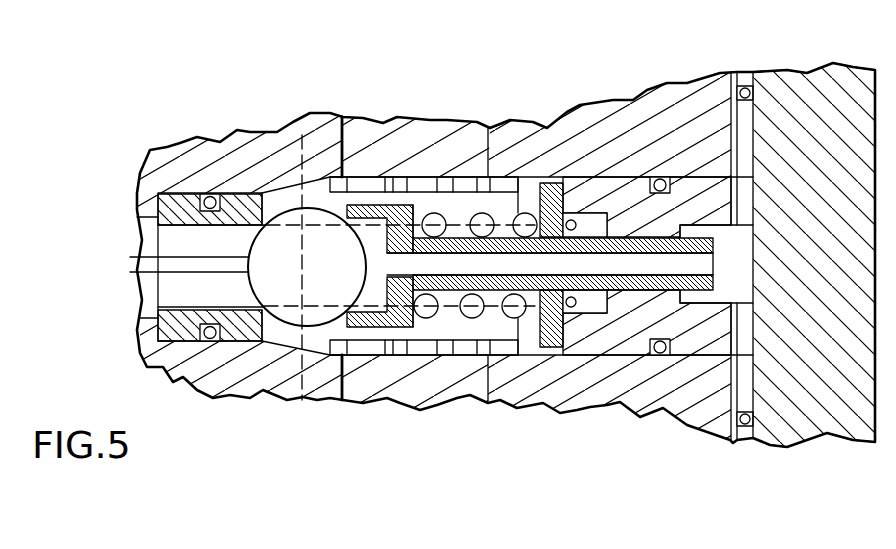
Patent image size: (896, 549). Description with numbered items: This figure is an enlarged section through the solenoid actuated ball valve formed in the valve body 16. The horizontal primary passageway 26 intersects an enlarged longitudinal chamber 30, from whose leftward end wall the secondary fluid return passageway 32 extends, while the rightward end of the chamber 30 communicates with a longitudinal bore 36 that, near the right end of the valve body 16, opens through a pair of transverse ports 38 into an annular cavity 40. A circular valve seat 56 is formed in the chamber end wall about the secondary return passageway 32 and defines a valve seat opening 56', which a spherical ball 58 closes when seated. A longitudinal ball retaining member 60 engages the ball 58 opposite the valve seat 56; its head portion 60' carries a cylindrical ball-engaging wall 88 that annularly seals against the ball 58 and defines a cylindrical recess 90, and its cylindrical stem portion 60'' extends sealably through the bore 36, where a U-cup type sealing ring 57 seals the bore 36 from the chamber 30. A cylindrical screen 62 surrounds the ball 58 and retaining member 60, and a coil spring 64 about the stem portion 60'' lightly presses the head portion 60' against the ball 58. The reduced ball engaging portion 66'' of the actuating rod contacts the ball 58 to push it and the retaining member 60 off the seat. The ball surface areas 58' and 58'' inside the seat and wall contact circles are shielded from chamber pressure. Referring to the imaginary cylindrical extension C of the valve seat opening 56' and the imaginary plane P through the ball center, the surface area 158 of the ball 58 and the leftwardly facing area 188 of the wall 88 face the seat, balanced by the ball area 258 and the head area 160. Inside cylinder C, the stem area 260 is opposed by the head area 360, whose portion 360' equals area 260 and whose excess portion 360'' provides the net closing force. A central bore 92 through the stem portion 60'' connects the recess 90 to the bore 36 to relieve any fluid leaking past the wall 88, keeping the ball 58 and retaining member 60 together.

The valve body 16 is at (573, 405).
The primary passageway 26 is at (477, 387).
The longitudinal chamber 30 is at (370, 197).
The secondary fluid return passageway 32 is at (153, 243).
The longitudinal bore 36 is at (635, 175).
The transverse ports 38 is at (715, 198).
The cavity 40 is at (755, 127).
The valve seat 56 is at (240, 146).
The valve seat opening 56' is at (212, 241).
The U-cup type sealing ring 57 is at (598, 135).
The spherical ball 58 is at (307, 204).
The ball surface area within seat contact circle 58' is at (211, 293).
The ball surface area within wall contact circle 58'' is at (380, 266).
The ball retaining member 60 is at (459, 382).
The head portion 60' is at (424, 408).
The cylindrical stem portion 60'' is at (635, 351).
The cylindrical screen 62 is at (545, 195).
The coil spring 64 is at (590, 225).
The ball engaging portion 66'' is at (164, 274).
The cylindrical ball-engaging wall 88 is at (380, 355).
The cylindrical recess 90 is at (320, 340).
The central bore 92 is at (653, 260).
The annular surface area 158 is at (232, 397).
The rightwardly facing annular surface area 160 is at (415, 177).
The leftwardly facing annular surface area 188 is at (352, 385).
The annular surface area 258 is at (290, 355).
The leftwardly facing annular surface area 260 is at (517, 180).
The rightwardly facing annular surface area 360 is at (465, 344).
The annular portion 360' is at (479, 160).
The net effective surface area 360'' is at (460, 176).
The imaginary cylindrical extension C is at (292, 225).
The imaginary plane P is at (300, 122).